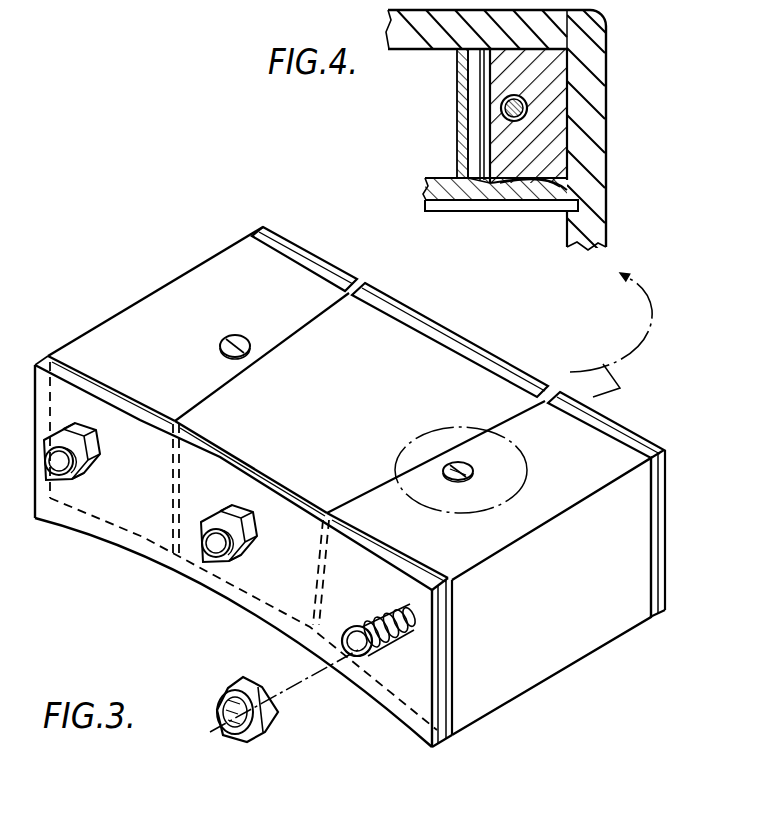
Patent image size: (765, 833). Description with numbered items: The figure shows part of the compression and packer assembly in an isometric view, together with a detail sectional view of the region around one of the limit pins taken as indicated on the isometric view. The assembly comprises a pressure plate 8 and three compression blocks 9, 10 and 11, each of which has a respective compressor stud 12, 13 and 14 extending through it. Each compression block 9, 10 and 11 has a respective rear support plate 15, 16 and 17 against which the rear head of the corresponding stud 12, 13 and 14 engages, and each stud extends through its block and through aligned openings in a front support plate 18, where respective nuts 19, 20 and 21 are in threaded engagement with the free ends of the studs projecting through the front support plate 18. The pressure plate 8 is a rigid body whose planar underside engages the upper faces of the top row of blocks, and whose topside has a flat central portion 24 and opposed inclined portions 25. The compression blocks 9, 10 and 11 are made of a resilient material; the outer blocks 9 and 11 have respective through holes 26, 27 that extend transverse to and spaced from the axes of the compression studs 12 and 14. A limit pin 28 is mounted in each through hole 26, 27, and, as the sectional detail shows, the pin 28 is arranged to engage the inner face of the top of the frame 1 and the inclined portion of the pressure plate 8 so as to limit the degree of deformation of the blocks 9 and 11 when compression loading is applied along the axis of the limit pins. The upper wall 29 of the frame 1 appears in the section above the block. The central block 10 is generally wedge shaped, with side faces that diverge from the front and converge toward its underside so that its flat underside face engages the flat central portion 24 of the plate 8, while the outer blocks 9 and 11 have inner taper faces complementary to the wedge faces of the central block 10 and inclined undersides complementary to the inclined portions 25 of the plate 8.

In FIG. 4, the frame 1 is at (606, 124).
In FIG. 4, the pressure plate 8 is at (505, 190).
In FIG. 3, the compression block 9 is at (127, 330).
In FIG. 3, the compression block 10 is at (360, 452).
In FIG. 4, the compression block 11 is at (545, 77).
In FIG. 3, the compression block 11 is at (525, 667).
In FIG. 3, the compressor stud 12 is at (53, 470).
In FIG. 3, the compressor stud 13 is at (210, 553).
In FIG. 4, the compressor stud 14 is at (511, 121).
In FIG. 3, the compressor stud 14 is at (353, 645).
In FIG. 3, the rear support plate 15 is at (290, 245).
In FIG. 3, the rear support plate 16 is at (400, 305).
In FIG. 3, the rear support plate 17 is at (637, 437).
In FIG. 3, the front support plate 18 is at (140, 533).
In FIG. 3, the nut 19 is at (90, 477).
In FIG. 3, the nut 20 is at (243, 557).
In FIG. 3, the nut 21 is at (267, 733).
In FIG. 4, the flat central portion 24 is at (458, 180).
In FIG. 4, the inclined portions 25 is at (512, 180).
In FIG. 3, the through hole 26 is at (226, 342).
In FIG. 4, the through hole 27 is at (468, 85).
In FIG. 3, the through hole 27 is at (473, 470).
In FIG. 4, the limit pin 28 is at (473, 129).
In FIG. 3, the limit pin 28 is at (454, 462).
In FIG. 4, the upper wall 29 is at (550, 36).